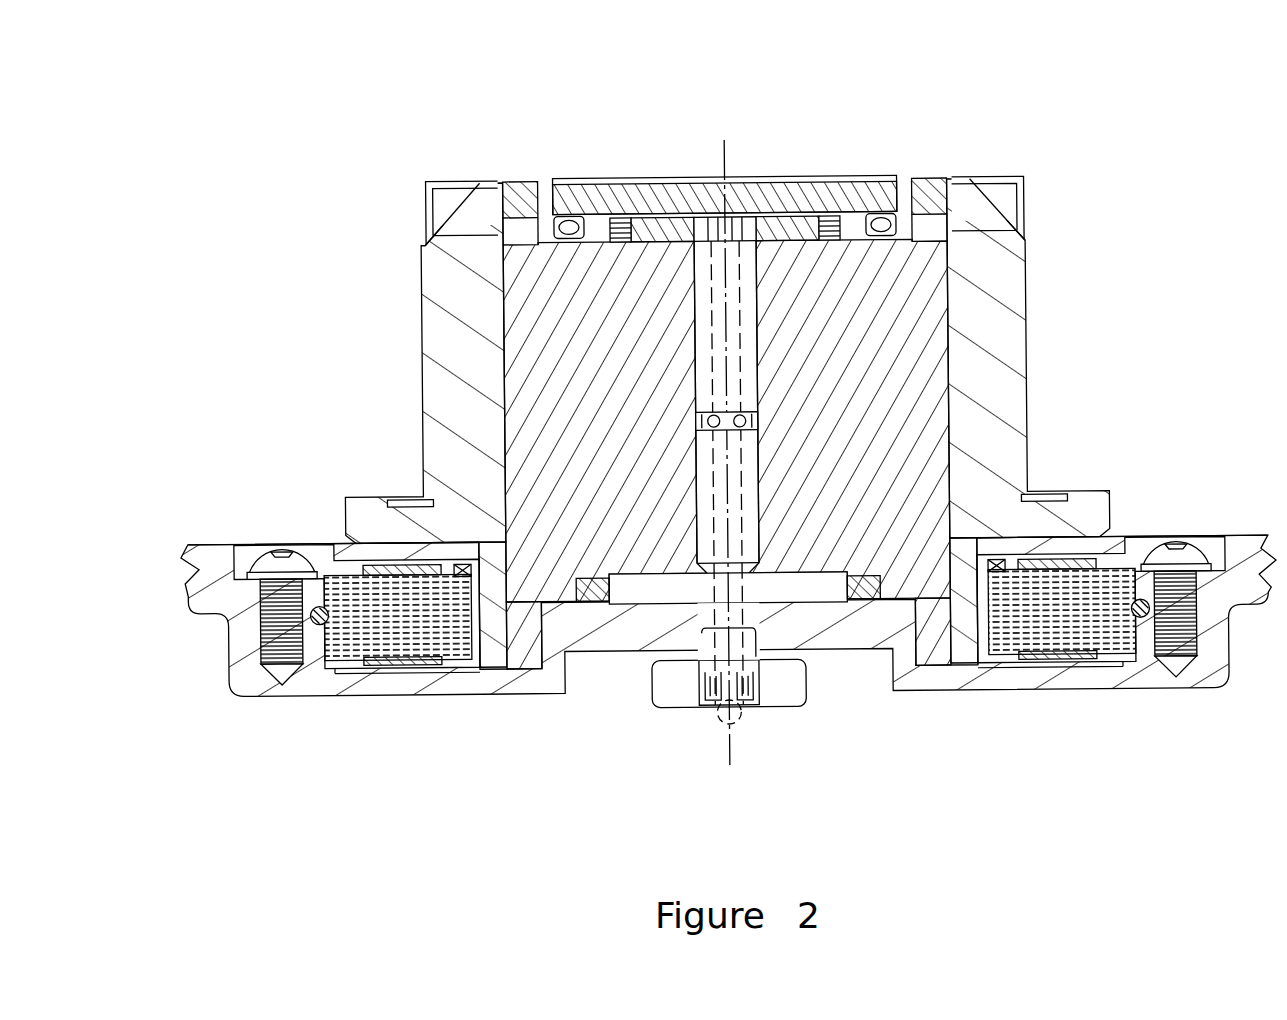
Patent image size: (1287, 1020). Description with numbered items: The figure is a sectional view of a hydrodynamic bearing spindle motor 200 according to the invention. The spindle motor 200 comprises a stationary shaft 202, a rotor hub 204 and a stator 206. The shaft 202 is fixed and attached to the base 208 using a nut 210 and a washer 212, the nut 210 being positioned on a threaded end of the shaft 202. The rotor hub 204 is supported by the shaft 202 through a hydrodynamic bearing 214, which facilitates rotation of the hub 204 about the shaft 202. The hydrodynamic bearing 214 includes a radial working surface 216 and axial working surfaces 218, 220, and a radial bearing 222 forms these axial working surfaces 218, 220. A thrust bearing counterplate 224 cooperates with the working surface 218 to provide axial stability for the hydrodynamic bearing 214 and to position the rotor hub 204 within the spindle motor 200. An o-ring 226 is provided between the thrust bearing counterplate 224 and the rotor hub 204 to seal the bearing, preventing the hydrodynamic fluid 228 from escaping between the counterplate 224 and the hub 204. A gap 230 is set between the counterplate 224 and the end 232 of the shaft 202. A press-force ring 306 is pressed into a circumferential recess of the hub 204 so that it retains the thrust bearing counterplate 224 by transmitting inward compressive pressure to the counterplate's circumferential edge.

The hydrodynamic bearing spindle motor 200 is at (727, 401).
The stationary shaft 202 is at (662, 177).
The rotor hub 204 is at (423, 242).
The stator 206 is at (1135, 542).
The base 208 is at (1130, 679).
The nut 210 is at (790, 692).
The washer 212 is at (656, 648).
The hydrodynamic bearing 214 is at (683, 178).
The radial working surface 216 is at (752, 418).
The axial working surface 218 is at (748, 256).
The axial working surface 220 is at (862, 215).
The radial bearing 222 is at (624, 178).
The thrust bearing counterplate 224 is at (696, 212).
The o-ring 226 is at (552, 177).
The hydrodynamic fluid 228 is at (753, 228).
The gap 230 is at (728, 215).
The end of the shaft 232 is at (762, 232).
The press-force ring 306 is at (508, 177).